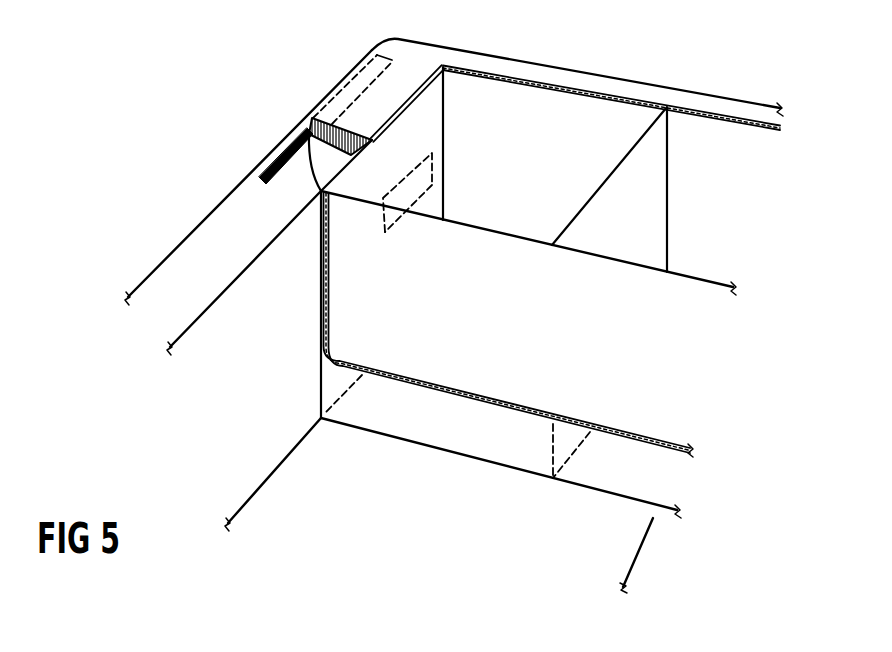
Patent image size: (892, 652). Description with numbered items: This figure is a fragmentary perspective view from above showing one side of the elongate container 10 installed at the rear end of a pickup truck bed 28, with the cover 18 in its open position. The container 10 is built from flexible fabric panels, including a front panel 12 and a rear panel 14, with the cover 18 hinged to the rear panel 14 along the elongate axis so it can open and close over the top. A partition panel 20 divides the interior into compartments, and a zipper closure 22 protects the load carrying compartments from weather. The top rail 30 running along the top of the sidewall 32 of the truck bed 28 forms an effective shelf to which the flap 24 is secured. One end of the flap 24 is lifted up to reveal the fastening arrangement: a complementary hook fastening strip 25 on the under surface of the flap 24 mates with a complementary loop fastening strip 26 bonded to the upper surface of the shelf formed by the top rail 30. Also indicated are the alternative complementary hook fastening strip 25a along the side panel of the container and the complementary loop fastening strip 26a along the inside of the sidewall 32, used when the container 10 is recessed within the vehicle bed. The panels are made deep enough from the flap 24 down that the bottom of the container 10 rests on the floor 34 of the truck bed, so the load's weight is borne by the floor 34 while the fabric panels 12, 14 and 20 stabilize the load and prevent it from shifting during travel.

The elongate container 10 is at (604, 113).
The front panel 12 is at (508, 139).
The rear panel 14 is at (504, 458).
The cover 18 is at (556, 346).
The partition panels 20 is at (608, 174).
The zipper closure 22 is at (505, 72).
The flap 24 is at (338, 171).
The complementary hook fastening strip 25 is at (375, 148).
The complementary hook fastening strip 25a is at (433, 181).
The complementary loop fastening strip 26 is at (357, 77).
The complementary loop fastening strip 26a is at (447, 208).
The pickup truck bed 28 is at (653, 561).
The top rail 30 is at (210, 231).
The sidewall 32 is at (276, 353).
The floor 34 is at (393, 530).